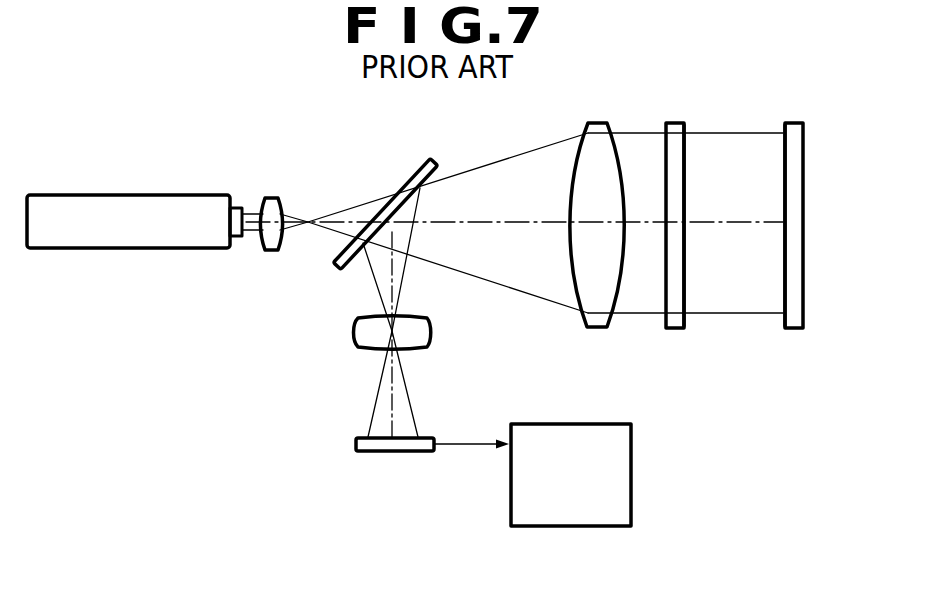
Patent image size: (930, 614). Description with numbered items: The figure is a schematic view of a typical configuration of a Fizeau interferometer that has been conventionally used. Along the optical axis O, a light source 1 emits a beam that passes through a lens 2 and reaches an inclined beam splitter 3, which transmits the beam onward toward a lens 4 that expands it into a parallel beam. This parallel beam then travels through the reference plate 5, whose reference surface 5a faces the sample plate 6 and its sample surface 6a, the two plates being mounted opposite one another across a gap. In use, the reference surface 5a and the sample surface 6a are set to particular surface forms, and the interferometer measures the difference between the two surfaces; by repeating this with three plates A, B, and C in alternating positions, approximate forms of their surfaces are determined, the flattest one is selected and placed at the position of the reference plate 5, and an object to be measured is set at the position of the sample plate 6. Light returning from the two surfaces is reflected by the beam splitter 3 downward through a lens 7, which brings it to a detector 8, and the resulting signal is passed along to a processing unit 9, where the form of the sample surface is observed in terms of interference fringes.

The laser light source 1 is at (136, 208).
The condenser lens 2 is at (272, 197).
The beam splitter 3 is at (418, 176).
The collimator lens 4 is at (600, 124).
The reference plate 5 is at (680, 122).
The reference surface 5a is at (690, 171).
The sample plate 6 is at (799, 122).
The sample surface 6a is at (783, 268).
The focusing lens 7 is at (353, 331).
The photodetector 8 is at (355, 445).
The signal processing unit 9 is at (585, 423).
The optical axis O is at (514, 222).